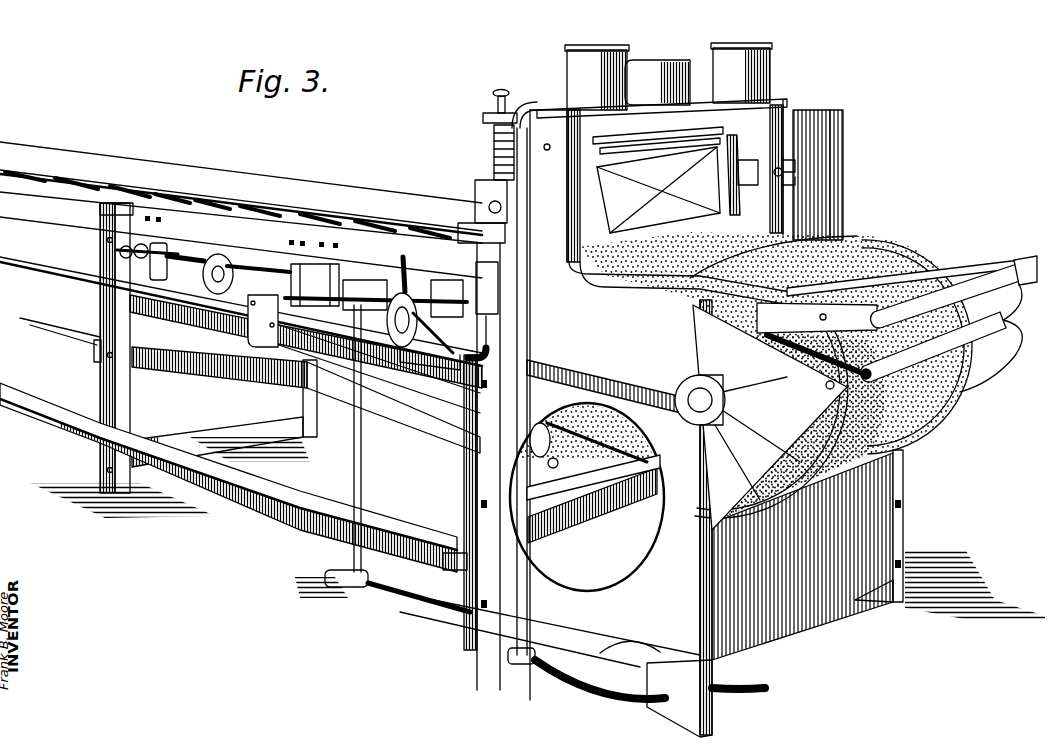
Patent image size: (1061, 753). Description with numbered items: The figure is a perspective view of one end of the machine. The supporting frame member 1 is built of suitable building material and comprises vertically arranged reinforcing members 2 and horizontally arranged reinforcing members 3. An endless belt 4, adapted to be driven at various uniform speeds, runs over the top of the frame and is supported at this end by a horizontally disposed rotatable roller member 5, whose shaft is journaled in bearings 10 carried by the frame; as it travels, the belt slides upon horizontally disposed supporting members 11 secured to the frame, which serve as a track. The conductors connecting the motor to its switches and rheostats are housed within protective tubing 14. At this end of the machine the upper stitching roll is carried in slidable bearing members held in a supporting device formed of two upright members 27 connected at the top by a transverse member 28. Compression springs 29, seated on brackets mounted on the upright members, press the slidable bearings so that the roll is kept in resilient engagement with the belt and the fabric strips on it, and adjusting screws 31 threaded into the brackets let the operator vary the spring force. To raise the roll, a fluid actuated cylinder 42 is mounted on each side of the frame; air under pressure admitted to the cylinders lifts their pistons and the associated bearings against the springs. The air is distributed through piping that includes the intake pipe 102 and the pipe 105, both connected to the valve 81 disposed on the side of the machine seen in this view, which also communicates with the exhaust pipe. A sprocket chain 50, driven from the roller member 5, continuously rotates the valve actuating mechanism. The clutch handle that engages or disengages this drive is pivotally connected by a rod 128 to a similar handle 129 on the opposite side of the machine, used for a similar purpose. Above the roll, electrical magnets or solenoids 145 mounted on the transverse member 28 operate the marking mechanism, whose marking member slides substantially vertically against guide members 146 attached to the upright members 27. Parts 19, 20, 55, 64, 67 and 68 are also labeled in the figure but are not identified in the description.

The supporting frame member 1 is at (903, 528).
The vertically arranged reinforcing members 2 is at (100, 455).
The horizontally arranged reinforcing members 3 is at (202, 360).
The endless belt 4 is at (95, 165).
The roller member 5 is at (968, 386).
The bearings 10 is at (690, 388).
The supporting members 11 is at (215, 212).
The protective tubing 14 is at (352, 545).
The upper roller 19 is at (1012, 290).
The lower roller 20 is at (1000, 347).
The upright members 27 is at (495, 126).
The transverse member 28 is at (787, 104).
The compression springs 29 is at (494, 150).
The adjusting screws 31 is at (492, 92).
The cylinders 42 is at (500, 314).
The sprocket chain 50 is at (200, 280).
The hanger bracket 55 is at (432, 365).
The gear housing 64 is at (347, 284).
The bracket 67 is at (125, 296).
The shaft knob 68 is at (100, 290).
The valve 81 is at (263, 321).
The pipe 102 is at (256, 280).
The pipe 105 is at (448, 310).
The rod 128 is at (412, 282).
The handle 129 is at (397, 283).
The electrical magnets or solenoids 145 is at (567, 60).
The guide members 146 is at (745, 185).